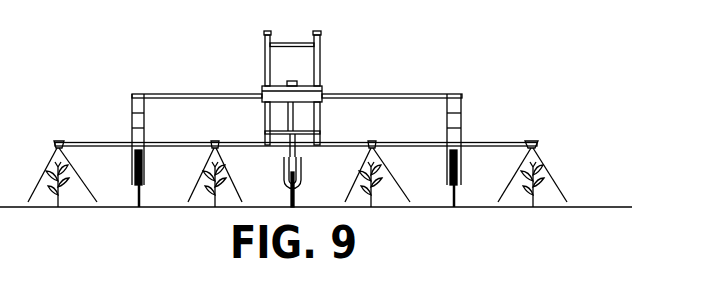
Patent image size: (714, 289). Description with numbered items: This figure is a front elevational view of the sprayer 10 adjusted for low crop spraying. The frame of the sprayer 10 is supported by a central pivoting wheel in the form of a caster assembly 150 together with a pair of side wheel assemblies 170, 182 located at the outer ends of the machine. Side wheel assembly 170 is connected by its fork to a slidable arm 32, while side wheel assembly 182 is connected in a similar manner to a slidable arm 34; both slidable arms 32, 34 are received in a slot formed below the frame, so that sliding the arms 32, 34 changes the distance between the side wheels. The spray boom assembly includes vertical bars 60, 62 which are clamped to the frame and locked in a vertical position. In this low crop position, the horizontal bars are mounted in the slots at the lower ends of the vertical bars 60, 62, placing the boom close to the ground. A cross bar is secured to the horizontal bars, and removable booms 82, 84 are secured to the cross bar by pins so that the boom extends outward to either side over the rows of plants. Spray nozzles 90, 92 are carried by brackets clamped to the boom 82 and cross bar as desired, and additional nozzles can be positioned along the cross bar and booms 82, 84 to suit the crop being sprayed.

The sprayer 10 is at (340, 33).
The slidable arm 32 is at (415, 68).
The slidable arm 34 is at (197, 93).
The vertical bar 60 is at (265, 120).
The vertical bar 62 is at (321, 117).
The removable boom 82 is at (82, 141).
The removable boom 84 is at (493, 141).
The spray nozzle 90 is at (212, 141).
The spray nozzle 92 is at (371, 141).
The caster assembly 150 is at (305, 190).
The side wheel assembly 170 is at (469, 111).
The side wheel assembly 182 is at (126, 106).